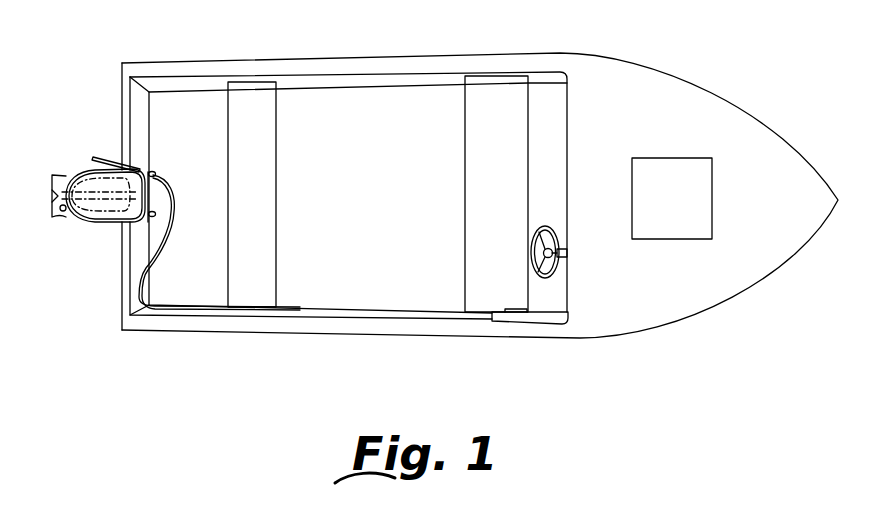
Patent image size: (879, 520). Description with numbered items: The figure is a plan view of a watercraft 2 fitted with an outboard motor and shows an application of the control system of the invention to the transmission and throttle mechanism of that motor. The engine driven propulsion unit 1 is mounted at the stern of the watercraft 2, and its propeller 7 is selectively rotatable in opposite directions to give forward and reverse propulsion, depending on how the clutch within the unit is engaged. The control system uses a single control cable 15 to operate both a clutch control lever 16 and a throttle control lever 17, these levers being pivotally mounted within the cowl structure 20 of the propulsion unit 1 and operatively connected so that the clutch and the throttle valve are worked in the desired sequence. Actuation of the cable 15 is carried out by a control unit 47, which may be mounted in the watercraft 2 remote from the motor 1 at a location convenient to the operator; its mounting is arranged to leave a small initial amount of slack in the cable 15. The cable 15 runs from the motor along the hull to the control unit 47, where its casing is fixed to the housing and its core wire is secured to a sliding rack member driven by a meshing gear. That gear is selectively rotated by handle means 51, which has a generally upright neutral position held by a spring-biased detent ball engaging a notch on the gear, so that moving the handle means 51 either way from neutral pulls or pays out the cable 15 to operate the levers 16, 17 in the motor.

The engine driven propulsion unit 1 is at (85, 171).
The watercraft 2 is at (237, 62).
The propeller 7 is at (71, 181).
The control cable 15 is at (142, 290).
The clutch control lever 16 is at (140, 171).
The throttle control lever 17 is at (120, 167).
The cowl structure 20 is at (98, 213).
The control unit 47 is at (533, 323).
The handle means 51 is at (517, 310).